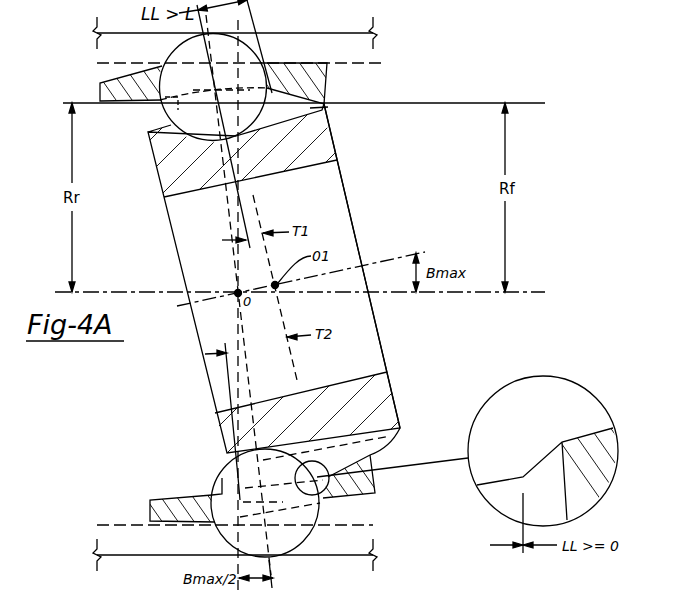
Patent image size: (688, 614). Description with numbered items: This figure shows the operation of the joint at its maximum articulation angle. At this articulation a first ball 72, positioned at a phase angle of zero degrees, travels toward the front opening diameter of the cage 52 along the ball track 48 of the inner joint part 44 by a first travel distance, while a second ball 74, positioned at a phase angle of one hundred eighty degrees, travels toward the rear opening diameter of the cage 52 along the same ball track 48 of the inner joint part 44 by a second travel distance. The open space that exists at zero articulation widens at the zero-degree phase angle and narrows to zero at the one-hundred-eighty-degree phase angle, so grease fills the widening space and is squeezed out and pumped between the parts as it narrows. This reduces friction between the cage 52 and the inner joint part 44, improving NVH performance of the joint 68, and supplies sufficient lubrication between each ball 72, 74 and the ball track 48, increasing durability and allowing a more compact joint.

The inner joint part 44 is at (333, 137).
The ball track 48 is at (326, 102).
The cage 52 is at (100, 98).
The joint 68 is at (382, 170).
The first ball 72 is at (178, 56).
The second ball 74 is at (210, 484).